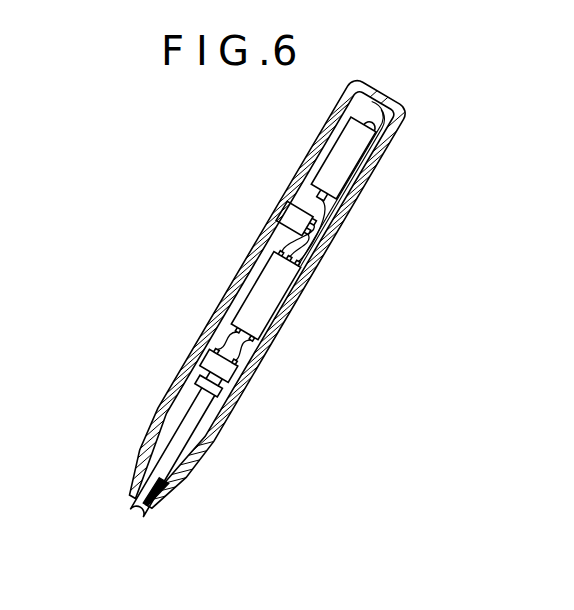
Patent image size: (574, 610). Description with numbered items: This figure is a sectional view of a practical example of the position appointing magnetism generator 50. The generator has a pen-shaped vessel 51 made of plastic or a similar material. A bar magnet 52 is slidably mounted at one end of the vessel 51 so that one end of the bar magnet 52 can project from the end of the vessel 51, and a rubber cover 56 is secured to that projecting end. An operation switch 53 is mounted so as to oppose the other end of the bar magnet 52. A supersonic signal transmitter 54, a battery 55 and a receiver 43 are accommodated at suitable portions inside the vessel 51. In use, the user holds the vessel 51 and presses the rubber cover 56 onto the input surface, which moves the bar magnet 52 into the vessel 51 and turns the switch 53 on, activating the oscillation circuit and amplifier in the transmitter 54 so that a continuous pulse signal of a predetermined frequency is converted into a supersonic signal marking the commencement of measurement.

The position appointing magnetism generator 50 is at (352, 252).
The pen-shaped vessel 51 is at (392, 102).
The bar magnet 52 is at (167, 493).
The operation switch 53 is at (238, 378).
The supersonic signal transmitter 54 is at (275, 305).
The battery 55 is at (347, 160).
The rubber cover 56 is at (131, 522).
The receiver 43 is at (282, 224).